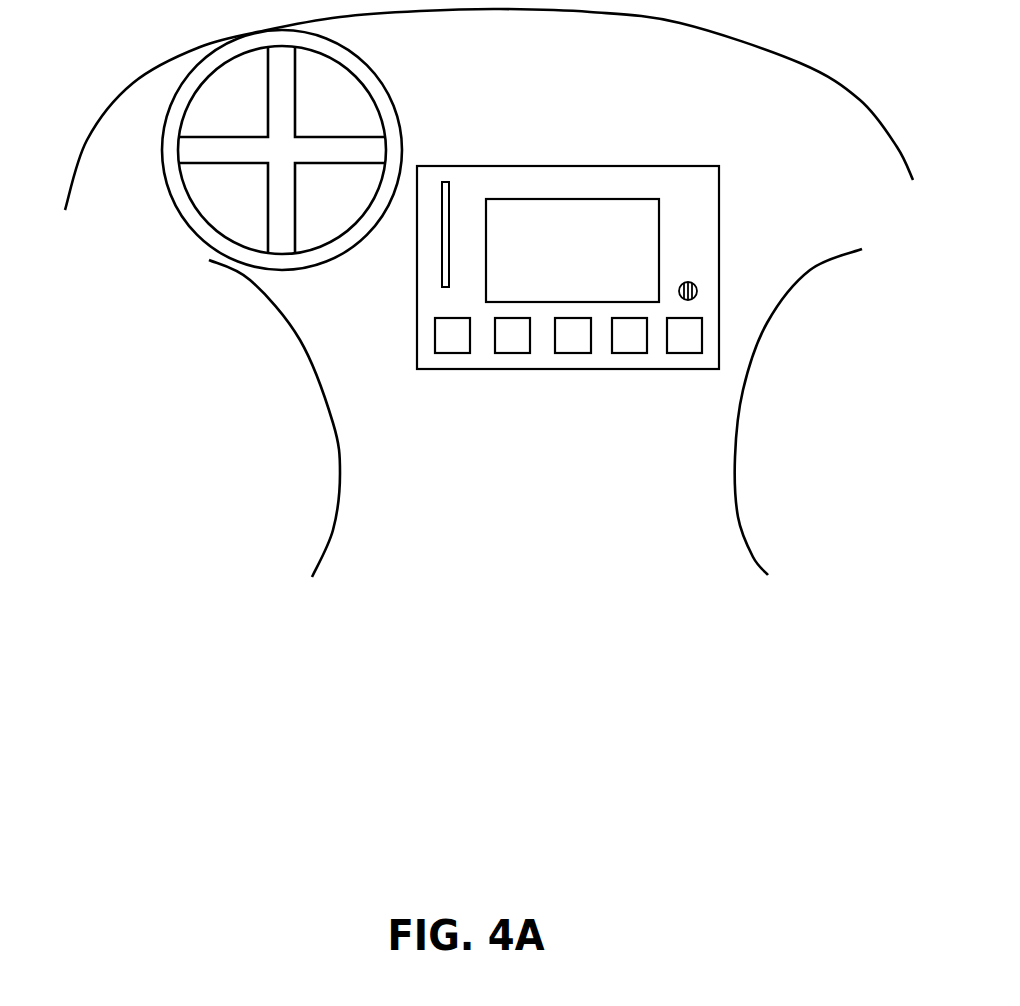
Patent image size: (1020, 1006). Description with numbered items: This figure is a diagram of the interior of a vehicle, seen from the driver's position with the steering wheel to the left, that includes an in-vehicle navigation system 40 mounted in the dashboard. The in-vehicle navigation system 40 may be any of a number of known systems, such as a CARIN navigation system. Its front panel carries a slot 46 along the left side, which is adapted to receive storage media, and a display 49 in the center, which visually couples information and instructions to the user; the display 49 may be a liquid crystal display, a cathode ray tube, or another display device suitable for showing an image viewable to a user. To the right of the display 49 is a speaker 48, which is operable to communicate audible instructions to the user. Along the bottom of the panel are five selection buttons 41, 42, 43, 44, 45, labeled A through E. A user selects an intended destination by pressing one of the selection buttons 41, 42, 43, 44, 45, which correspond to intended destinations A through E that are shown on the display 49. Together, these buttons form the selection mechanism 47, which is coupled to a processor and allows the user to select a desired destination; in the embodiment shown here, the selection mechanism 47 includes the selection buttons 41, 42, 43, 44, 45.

The in-vehicle navigation system 40 is at (645, 177).
The selection button 41 is at (452, 348).
The selection button 42 is at (512, 348).
The selection button 43 is at (573, 348).
The selection button 44 is at (628, 348).
The selection button 45 is at (687, 348).
The slot 46 is at (463, 186).
The selection mechanism 47 is at (556, 467).
The speaker 48 is at (697, 291).
The display 49 is at (637, 243).